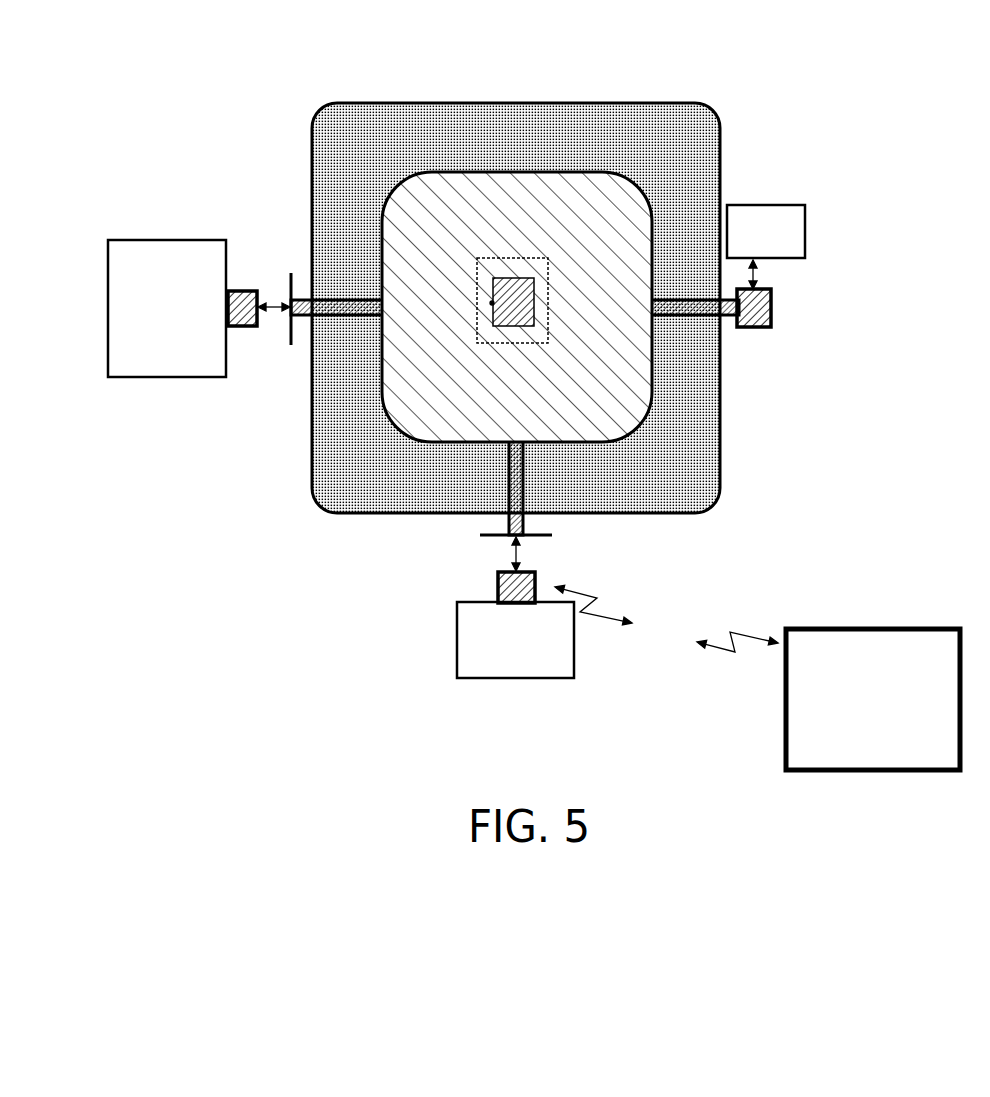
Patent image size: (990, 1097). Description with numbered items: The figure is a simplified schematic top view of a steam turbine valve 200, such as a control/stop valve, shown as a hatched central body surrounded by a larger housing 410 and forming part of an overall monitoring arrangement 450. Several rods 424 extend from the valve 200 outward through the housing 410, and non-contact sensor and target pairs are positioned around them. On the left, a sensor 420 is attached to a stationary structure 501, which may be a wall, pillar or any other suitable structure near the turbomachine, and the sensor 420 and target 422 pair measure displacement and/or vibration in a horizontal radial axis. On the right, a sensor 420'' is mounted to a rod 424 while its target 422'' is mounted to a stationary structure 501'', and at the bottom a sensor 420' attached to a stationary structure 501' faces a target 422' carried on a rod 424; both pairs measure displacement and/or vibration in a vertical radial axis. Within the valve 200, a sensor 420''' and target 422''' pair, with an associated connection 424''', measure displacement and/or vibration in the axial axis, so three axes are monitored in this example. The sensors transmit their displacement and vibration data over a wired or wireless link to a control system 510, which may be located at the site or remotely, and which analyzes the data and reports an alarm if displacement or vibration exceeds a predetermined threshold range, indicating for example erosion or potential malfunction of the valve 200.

The housing / outer body 410 is at (393, 103).
The steam turbine valve 200 is at (576, 172).
The rod 424 is at (508, 340).
The sensor 420 is at (255, 259).
The target 422 is at (266, 344).
The stationary structure 501 is at (167, 308).
The target 422''' is at (539, 278).
The sensor 420''' is at (527, 330).
The internal connection 424''' is at (445, 295).
The stationary structure 501'' is at (766, 231).
The target 422'' is at (805, 277).
The sensor 420'' is at (799, 322).
The target 422' is at (560, 553).
The sensor 420' is at (442, 587).
The stationary structure 501' is at (544, 631).
The control system 510 is at (828, 699).
The system 450 is at (338, 667).